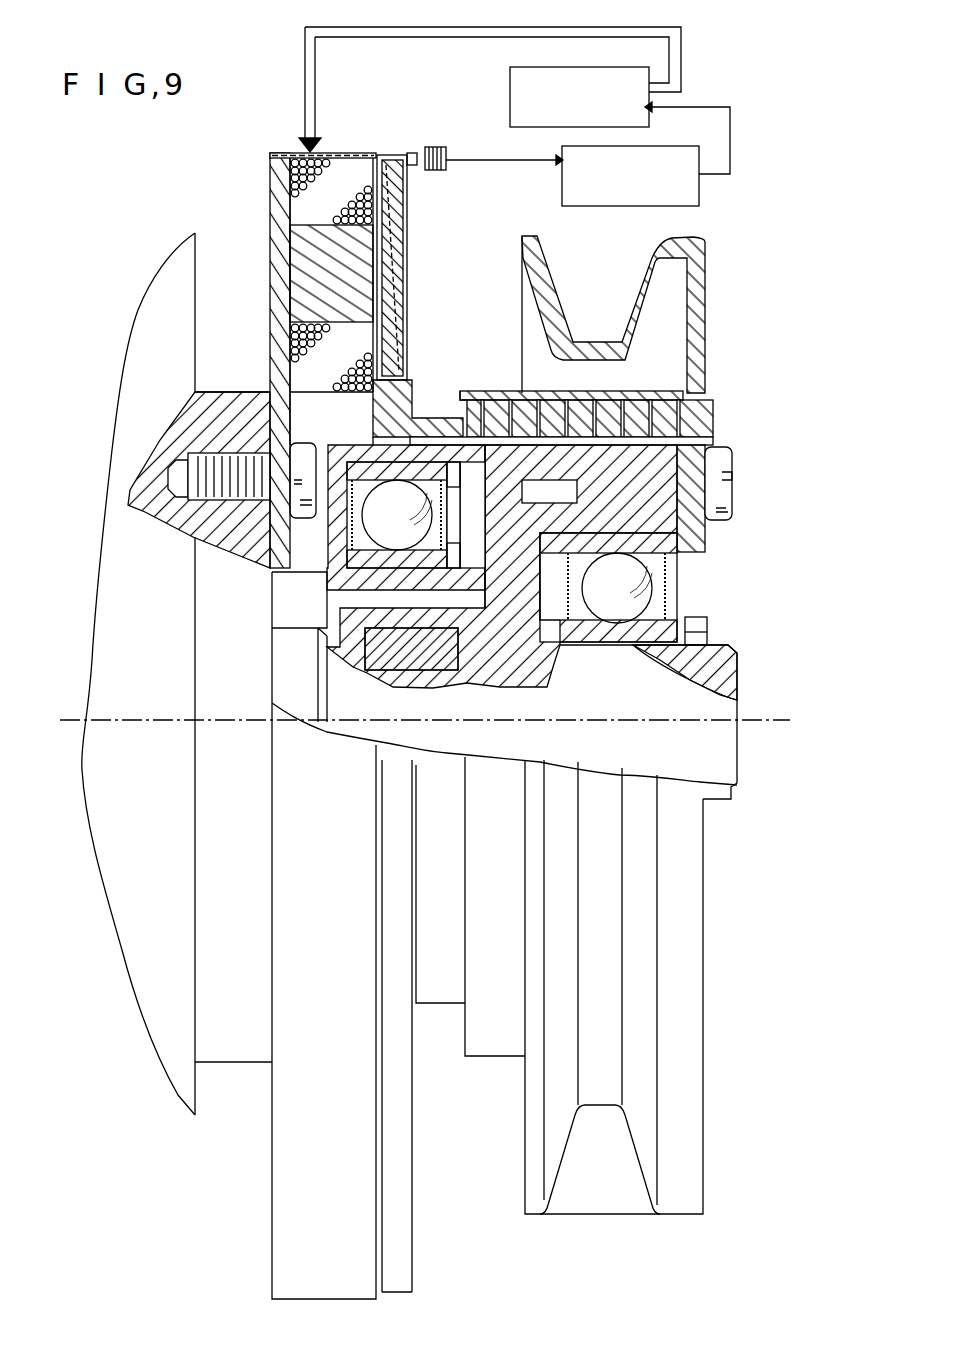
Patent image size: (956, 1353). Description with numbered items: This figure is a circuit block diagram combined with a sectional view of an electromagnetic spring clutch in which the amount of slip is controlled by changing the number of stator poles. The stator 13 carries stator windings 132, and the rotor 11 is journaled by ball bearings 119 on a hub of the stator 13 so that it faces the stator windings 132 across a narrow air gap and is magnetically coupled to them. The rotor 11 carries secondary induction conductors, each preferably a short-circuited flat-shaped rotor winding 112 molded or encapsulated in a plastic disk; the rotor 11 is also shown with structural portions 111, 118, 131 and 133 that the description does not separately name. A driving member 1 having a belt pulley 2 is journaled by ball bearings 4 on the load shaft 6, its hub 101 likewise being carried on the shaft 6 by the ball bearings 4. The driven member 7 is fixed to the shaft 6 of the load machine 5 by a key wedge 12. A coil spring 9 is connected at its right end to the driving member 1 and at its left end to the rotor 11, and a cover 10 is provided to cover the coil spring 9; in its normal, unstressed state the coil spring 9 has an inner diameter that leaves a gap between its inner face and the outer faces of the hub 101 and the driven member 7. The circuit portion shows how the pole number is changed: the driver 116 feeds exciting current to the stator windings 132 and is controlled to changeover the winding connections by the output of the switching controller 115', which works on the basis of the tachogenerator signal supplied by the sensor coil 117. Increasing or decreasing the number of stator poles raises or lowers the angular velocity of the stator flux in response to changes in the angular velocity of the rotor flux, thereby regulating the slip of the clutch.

The driving member 1 is at (698, 445).
The belt pulley 2 is at (548, 272).
The ball bearings 4 is at (640, 585).
The load machine 5 is at (205, 932).
The load shaft 6 is at (710, 745).
The driven member 7 is at (508, 630).
The coil spring 9 is at (493, 400).
The cover 10 is at (660, 455).
The rotor 11 is at (390, 160).
The key wedge 12 is at (447, 662).
The stator 13 is at (270, 184).
The hub 101 is at (703, 545).
The coil holder 111 is at (400, 392).
The rotor winding 112 is at (395, 256).
The switching controller 115' is at (641, 163).
The driver 116 is at (580, 68).
The sensor coil 117 is at (433, 146).
The sensor mount 118 is at (412, 150).
The ball bearings 119 is at (272, 566).
The cover plate 131 is at (300, 153).
The stator windings 132 is at (332, 158).
The magnet 133 is at (300, 262).